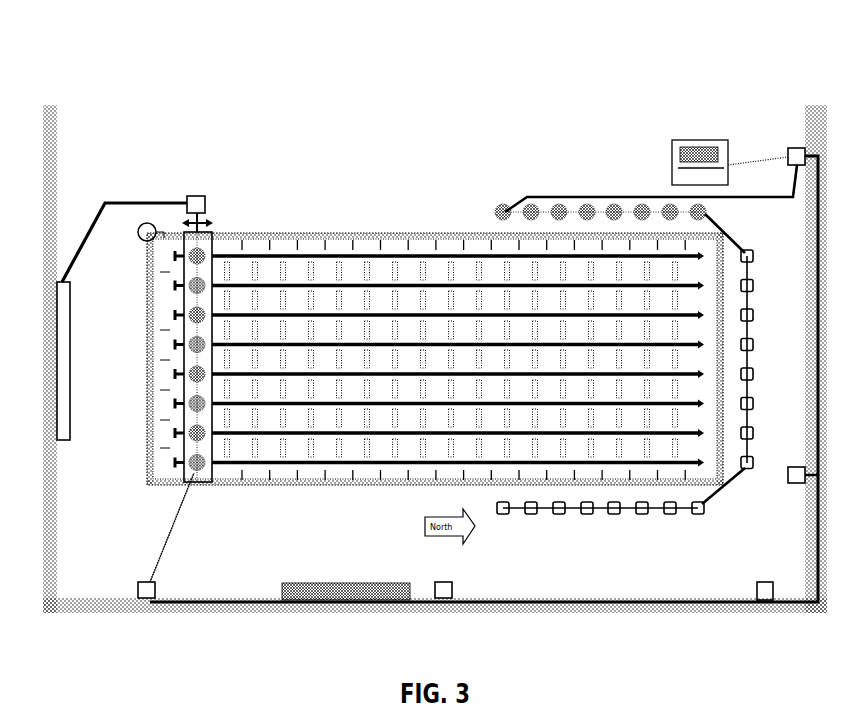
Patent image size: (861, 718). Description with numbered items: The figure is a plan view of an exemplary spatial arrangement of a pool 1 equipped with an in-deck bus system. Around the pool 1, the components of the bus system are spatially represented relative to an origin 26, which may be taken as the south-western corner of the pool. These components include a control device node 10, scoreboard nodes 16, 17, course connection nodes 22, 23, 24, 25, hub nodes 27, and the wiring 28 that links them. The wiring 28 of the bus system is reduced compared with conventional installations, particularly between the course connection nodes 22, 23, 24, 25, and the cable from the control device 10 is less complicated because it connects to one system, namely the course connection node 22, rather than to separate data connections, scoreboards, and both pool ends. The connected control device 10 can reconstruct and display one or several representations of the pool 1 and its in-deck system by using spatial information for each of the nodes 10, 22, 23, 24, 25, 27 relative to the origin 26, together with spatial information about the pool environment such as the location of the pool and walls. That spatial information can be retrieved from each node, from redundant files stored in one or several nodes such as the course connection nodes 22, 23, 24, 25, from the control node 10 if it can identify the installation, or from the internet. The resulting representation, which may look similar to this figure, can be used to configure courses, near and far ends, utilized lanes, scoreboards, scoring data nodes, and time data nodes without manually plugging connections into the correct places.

The pool 1 is at (355, 353).
The control device node 10 is at (700, 148).
The scoreboard node 16 is at (63, 360).
The scoreboard node 17 is at (327, 593).
The course connection node 22 is at (792, 148).
The course connection node 23 is at (792, 477).
The course connection node 24 is at (762, 590).
The course connection node 25 is at (155, 600).
The origin 26 is at (148, 228).
The hub nodes 27 is at (745, 312).
The wiring 28 is at (818, 327).